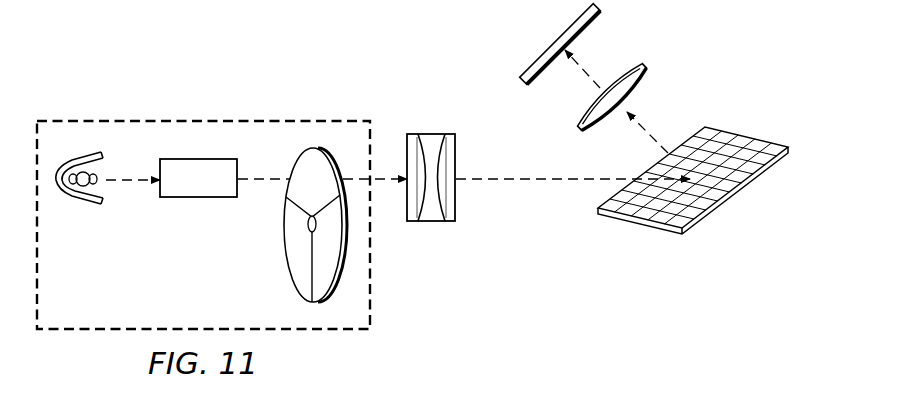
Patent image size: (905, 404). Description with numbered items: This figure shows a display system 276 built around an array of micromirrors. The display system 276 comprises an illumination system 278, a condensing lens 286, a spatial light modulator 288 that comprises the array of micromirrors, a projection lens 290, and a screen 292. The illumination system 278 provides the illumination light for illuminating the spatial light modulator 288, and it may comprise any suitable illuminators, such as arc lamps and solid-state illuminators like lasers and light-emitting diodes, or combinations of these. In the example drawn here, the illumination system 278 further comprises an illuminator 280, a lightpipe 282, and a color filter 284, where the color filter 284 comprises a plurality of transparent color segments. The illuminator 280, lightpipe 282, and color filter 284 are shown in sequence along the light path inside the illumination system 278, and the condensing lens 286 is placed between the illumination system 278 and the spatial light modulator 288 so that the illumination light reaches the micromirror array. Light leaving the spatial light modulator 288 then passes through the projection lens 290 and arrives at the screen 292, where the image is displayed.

The display system 276 is at (279, 56).
The illumination system 278 is at (131, 119).
The illuminator 280 is at (80, 199).
The lightpipe 282 is at (198, 198).
The color filter 284 is at (287, 253).
The condensing lens 286 is at (431, 222).
The spatial light modulator 288 is at (740, 131).
The projection lens 290 is at (641, 68).
The screen 292 is at (553, 45).